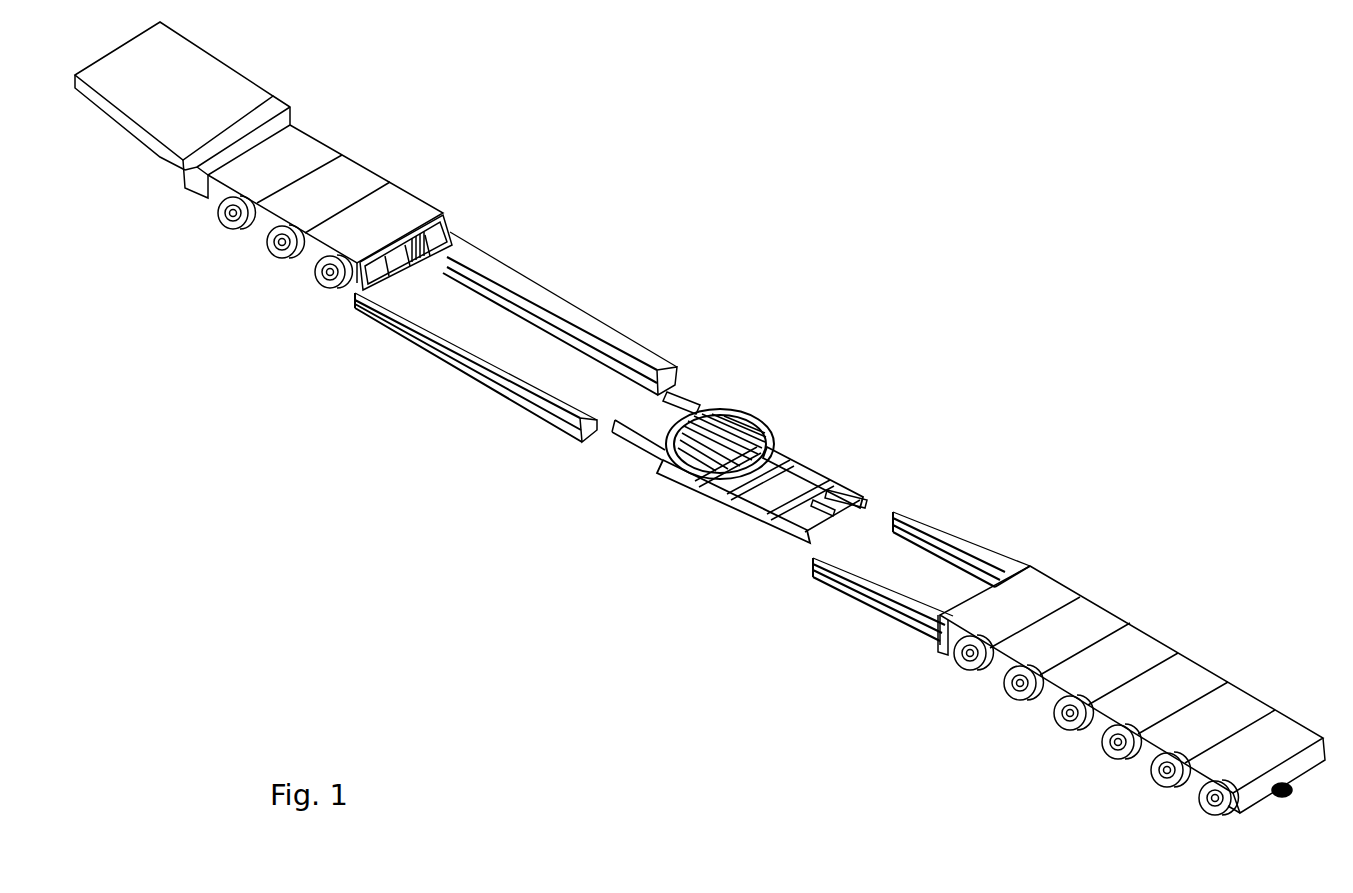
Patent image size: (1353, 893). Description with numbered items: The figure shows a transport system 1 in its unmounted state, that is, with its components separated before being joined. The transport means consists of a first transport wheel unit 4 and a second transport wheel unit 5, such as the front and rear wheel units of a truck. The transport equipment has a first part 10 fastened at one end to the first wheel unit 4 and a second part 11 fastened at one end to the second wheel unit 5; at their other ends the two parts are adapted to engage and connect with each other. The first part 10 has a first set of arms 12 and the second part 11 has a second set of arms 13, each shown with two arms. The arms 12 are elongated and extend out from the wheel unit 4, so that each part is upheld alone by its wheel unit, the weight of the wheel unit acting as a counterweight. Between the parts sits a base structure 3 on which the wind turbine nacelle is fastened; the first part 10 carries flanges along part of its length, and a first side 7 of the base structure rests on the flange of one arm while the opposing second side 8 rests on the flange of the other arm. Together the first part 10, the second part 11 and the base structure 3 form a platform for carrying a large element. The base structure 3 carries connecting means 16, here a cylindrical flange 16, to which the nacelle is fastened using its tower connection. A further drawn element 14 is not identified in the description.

The transport system 1 is at (1050, 282).
The base structure 3 is at (727, 505).
The first transport wheel unit 4 is at (291, 212).
The second transport wheel unit 5 is at (1090, 690).
The first side of the base structure 7 is at (670, 475).
The second side of the base structure 8 is at (793, 459).
The first part 10 is at (513, 283).
The second part 11 is at (893, 607).
The first set of arms 12 is at (475, 265).
The second set of arms 13 is at (860, 592).
The beam end 14 is at (610, 366).
The connecting means 16 is at (722, 404).